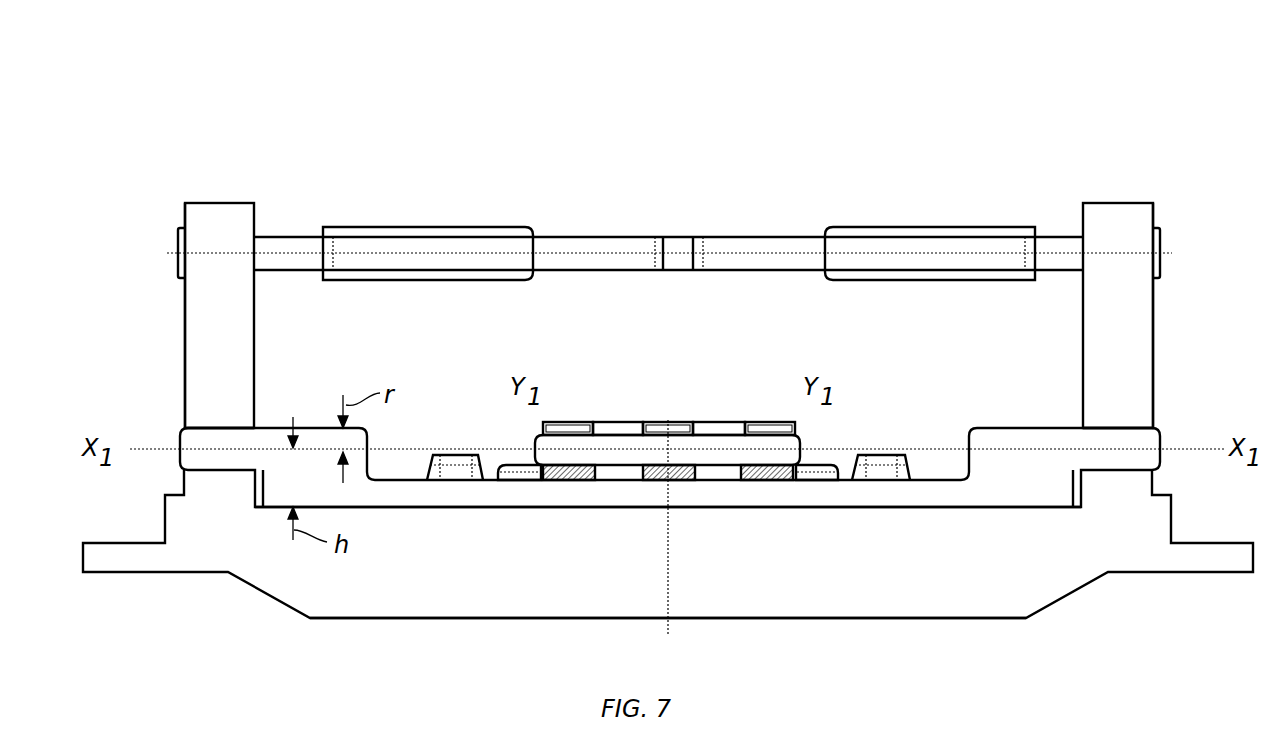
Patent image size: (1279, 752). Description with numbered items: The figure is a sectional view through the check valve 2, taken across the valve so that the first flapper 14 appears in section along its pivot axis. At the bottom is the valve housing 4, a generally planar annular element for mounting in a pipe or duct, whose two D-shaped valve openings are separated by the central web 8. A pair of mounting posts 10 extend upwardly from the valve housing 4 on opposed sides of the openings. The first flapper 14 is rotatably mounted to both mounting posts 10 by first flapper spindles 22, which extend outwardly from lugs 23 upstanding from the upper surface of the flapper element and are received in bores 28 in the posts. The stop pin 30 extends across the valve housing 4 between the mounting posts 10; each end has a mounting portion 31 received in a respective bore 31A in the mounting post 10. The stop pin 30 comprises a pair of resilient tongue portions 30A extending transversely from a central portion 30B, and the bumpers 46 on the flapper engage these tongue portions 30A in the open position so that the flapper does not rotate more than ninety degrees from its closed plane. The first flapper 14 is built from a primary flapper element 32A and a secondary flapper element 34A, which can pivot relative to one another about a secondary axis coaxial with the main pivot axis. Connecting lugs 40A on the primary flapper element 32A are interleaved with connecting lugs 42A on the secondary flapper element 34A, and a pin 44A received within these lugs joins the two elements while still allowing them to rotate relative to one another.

The check valve 2 is at (281, 84).
The valve housing 4 is at (1233, 563).
The central web 8 is at (963, 605).
The mounting post 10 is at (1120, 213).
The first flapper 14 is at (762, 482).
The first flapper spindle 22 is at (192, 437).
The lug 23 is at (258, 493).
The bore 28 is at (216, 428).
The stop pin 30 is at (960, 250).
The resilient tongue portion 30A is at (868, 227).
The central portion 30B is at (680, 245).
The mounting portion 31 is at (183, 265).
The bore 31A is at (184, 232).
The primary flapper element 32A is at (633, 492).
The secondary flapper element 34A is at (822, 480).
The connecting lug 40A is at (617, 425).
The connecting lug 42A is at (563, 424).
The pin 44A is at (606, 462).
The bumper 46 is at (882, 455).